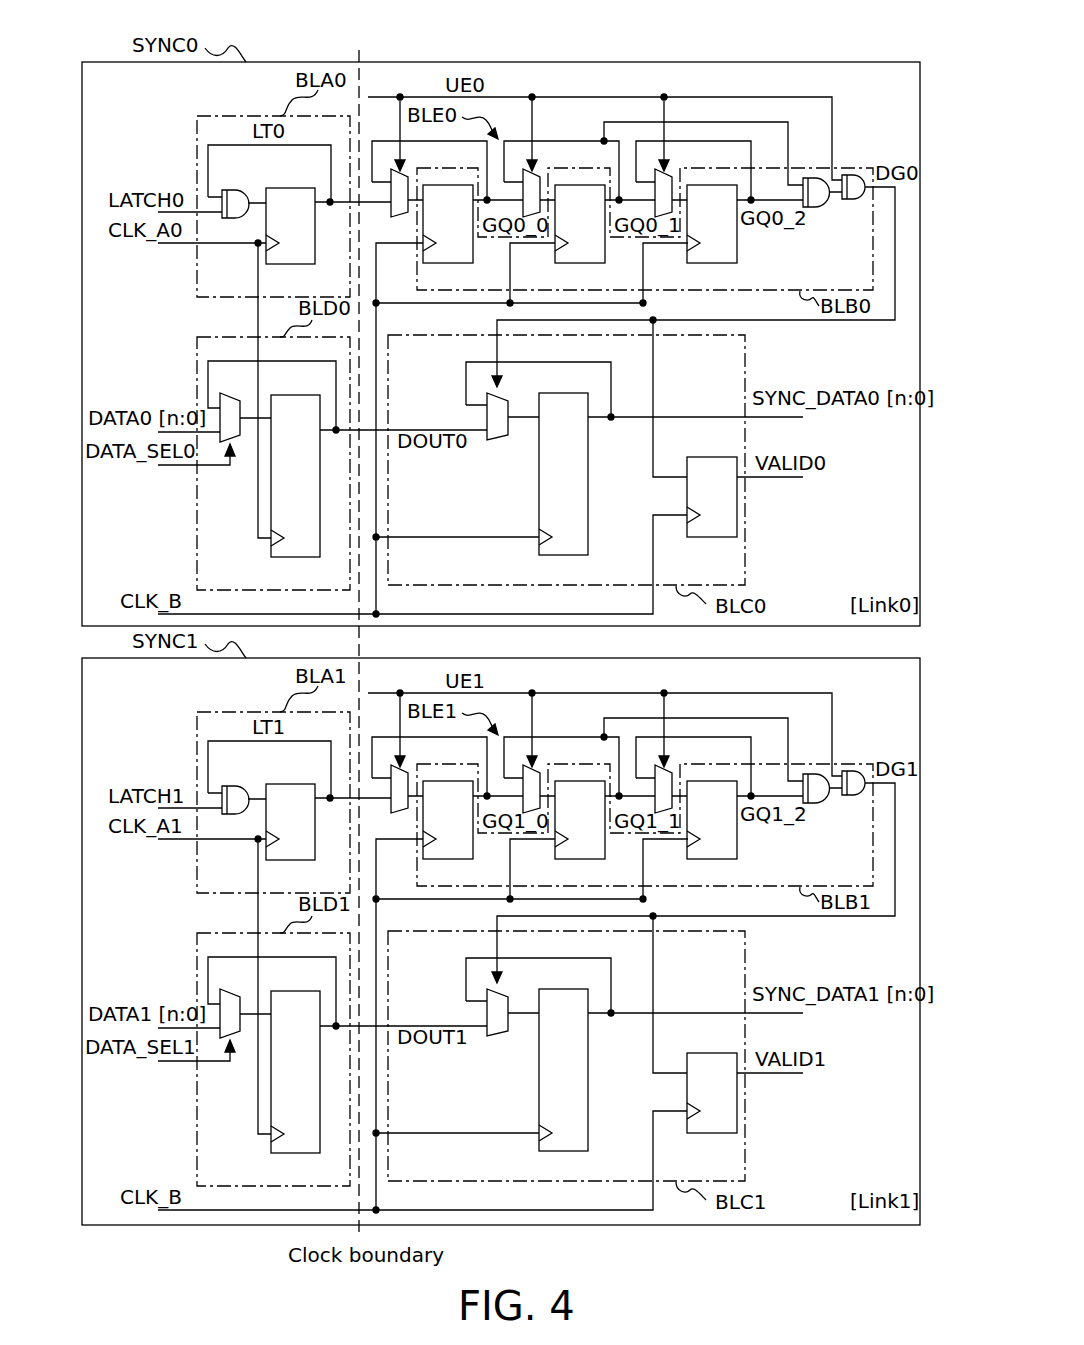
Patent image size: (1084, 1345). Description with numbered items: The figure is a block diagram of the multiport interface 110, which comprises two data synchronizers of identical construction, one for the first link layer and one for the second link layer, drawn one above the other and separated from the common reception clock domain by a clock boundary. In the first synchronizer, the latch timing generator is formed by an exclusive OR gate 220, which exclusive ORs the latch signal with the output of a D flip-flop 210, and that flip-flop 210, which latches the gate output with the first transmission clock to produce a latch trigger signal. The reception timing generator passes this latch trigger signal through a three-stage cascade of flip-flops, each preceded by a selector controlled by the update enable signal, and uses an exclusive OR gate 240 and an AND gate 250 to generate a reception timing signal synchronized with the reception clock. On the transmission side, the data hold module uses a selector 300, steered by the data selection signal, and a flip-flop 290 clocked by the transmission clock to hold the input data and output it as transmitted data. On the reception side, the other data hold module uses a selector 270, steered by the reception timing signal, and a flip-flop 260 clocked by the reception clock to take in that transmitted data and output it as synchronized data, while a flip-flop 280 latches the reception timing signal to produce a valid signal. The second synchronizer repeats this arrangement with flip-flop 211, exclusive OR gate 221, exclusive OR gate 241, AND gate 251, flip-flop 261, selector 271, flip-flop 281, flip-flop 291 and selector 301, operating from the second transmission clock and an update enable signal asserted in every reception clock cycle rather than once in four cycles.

The multiport interface 110 is at (828, 43).
The D flip-flop 210 is at (283, 264).
The D flip-flop 211 is at (283, 860).
The exclusive OR gate 220 is at (232, 190).
The exclusive OR gate 221 is at (232, 786).
The exclusive OR gate 240 is at (812, 178).
The exclusive OR gate 241 is at (812, 774).
The AND gate 250 is at (852, 175).
The AND gate 251 is at (852, 771).
The D flip-flop 260 is at (562, 555).
The D flip-flop 261 is at (562, 1151).
The selector 270 is at (500, 394).
The selector 271 is at (500, 990).
The D flip-flop 280 is at (710, 537).
The D flip-flop 281 is at (710, 1133).
The D flip-flop 290 is at (284, 557).
The D flip-flop 291 is at (284, 1153).
The selector 300 is at (234, 384).
The selector 301 is at (234, 980).